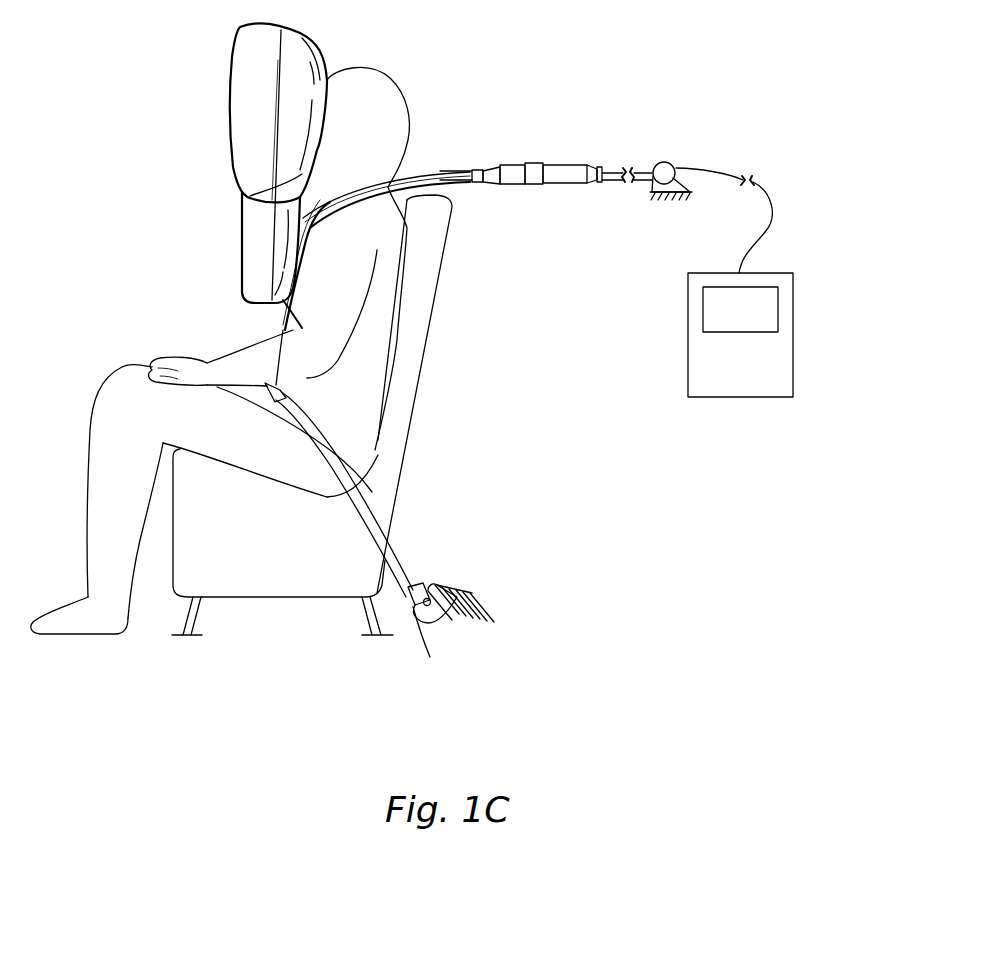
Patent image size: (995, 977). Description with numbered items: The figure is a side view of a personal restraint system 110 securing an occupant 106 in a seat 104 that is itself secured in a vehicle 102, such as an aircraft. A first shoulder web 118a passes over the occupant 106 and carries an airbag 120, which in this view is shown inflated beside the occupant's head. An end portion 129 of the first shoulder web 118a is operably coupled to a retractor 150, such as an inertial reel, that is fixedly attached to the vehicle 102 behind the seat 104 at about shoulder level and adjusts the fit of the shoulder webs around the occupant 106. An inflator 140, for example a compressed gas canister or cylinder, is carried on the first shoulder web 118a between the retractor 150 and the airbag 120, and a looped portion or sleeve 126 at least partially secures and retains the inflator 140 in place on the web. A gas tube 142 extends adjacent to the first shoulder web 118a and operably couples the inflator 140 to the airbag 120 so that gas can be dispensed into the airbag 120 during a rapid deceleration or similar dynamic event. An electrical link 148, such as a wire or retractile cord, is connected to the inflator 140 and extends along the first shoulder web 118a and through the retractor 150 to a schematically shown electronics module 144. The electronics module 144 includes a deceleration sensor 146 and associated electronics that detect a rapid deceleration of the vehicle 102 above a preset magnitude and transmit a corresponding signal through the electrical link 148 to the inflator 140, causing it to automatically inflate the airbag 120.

The personal restraint system 110 is at (166, 100).
The airbag 120 is at (220, 175).
The gas tube 142 is at (432, 170).
The sleeve 126 is at (533, 164).
The inflator 140 is at (569, 168).
The electrical link 148 is at (622, 172).
The retractor 150 is at (666, 162).
The end portion 129 is at (618, 185).
The deceleration sensor 146 is at (723, 290).
The electronics module 144 is at (730, 398).
The first shoulder web 118a is at (282, 322).
The occupant 106 is at (95, 504).
The seat 104 is at (268, 575).
The vehicle 102 is at (403, 523).